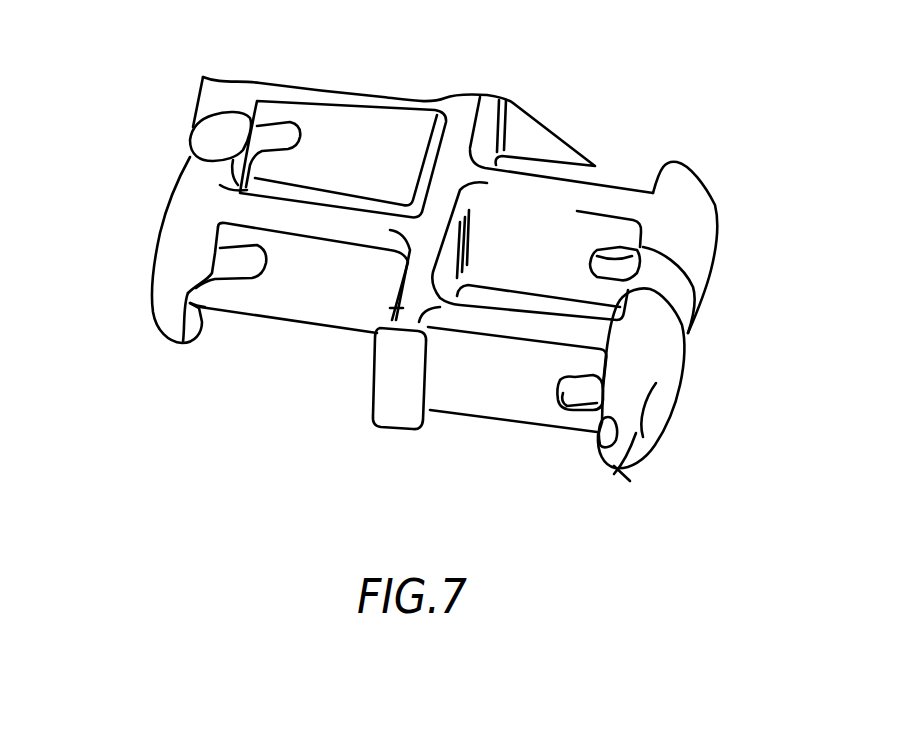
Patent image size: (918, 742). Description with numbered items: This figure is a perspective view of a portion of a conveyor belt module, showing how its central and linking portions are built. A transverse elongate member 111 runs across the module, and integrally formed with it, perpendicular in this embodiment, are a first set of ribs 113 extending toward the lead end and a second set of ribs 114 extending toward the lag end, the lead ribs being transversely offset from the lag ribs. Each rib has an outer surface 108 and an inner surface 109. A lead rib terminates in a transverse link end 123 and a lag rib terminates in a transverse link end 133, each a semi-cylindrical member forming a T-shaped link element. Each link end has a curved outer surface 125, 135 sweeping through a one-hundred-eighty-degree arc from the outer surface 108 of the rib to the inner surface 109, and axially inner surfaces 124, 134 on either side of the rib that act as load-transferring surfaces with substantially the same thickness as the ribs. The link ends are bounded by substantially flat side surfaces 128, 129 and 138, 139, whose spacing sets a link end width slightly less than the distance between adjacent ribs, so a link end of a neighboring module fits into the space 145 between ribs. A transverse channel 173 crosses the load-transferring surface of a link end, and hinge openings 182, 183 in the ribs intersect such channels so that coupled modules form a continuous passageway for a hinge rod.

The outer surface of rib 108 is at (543, 327).
The inner surface of rib 109 is at (557, 427).
The transverse elongate member 111 is at (373, 303).
The first set of ribs 113 is at (508, 323).
The second set of ribs 114 is at (333, 233).
The transverse link end 123 is at (657, 383).
The axially inner surface 124 is at (587, 437).
The curved outer surface 125 is at (675, 359).
The side surface 128 is at (650, 440).
The side surface 129 is at (697, 322).
The transverse link end 133 is at (173, 233).
The axially inner surface 134 is at (217, 290).
The curved outer surface 135 is at (218, 222).
The side surface 138 is at (163, 293).
The side surface 139 is at (190, 143).
The space 145 is at (501, 298).
The transverse channel 173 is at (183, 343).
The hinge opening 182 is at (567, 407).
The hinge opening 183 is at (245, 262).